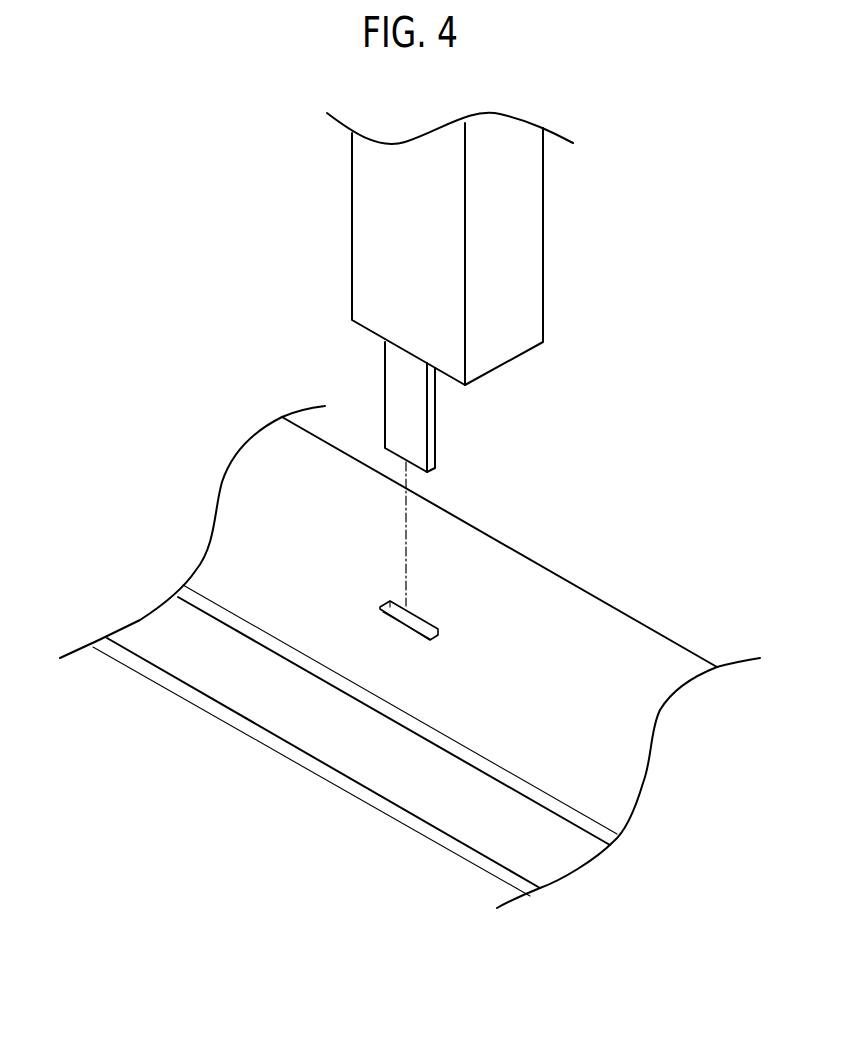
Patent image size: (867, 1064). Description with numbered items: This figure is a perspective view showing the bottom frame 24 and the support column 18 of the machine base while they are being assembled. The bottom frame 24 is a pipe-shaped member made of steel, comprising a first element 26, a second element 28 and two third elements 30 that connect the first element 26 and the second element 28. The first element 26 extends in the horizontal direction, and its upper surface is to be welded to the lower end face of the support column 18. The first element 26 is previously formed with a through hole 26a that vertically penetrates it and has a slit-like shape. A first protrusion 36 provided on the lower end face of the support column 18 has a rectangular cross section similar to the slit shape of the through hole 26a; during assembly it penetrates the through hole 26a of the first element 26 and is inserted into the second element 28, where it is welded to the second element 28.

The support column 18 is at (392, 190).
The first protrusion 36 is at (412, 412).
The bottom frame 24 is at (198, 473).
The first element 26 is at (553, 602).
The through hole 26a is at (413, 623).
The third element 30 is at (170, 628).
The second element 28 is at (218, 708).